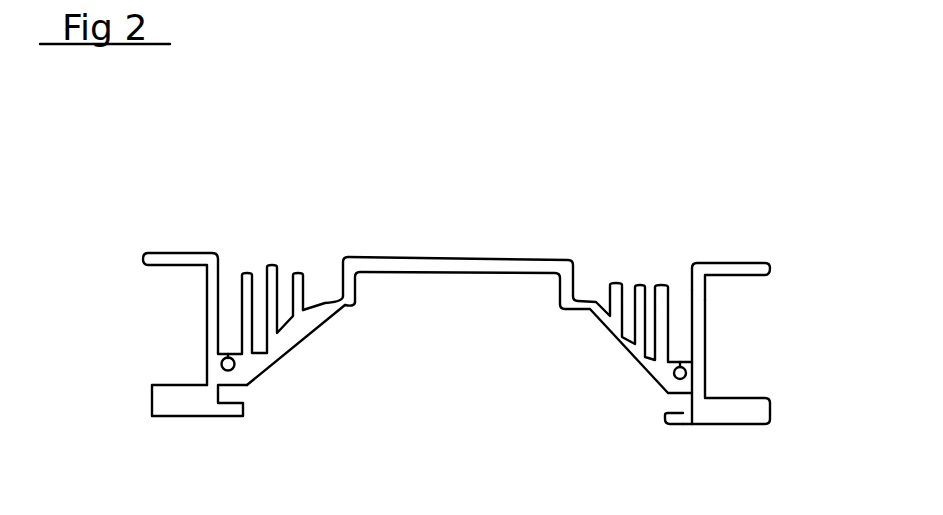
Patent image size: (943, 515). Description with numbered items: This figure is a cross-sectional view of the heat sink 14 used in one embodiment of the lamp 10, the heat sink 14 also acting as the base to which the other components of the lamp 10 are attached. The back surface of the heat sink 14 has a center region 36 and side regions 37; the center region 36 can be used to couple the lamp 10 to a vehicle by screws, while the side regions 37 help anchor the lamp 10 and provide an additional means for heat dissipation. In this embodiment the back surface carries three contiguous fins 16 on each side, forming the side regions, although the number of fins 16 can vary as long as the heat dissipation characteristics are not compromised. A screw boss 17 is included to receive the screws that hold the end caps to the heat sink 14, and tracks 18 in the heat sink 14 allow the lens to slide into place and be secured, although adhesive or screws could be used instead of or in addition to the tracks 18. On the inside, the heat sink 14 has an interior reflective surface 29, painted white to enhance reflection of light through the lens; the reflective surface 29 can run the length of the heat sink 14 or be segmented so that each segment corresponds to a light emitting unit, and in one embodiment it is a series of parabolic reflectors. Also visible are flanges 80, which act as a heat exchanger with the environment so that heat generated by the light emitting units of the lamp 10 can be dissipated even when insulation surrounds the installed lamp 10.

The lamp 10 is at (255, 164).
The heat sink 14 is at (372, 262).
The center region 36 is at (453, 258).
The contiguous fins 16 is at (612, 293).
The interior reflective surface 29 is at (299, 333).
The flanges 80 is at (170, 402).
The screw boss 17 is at (688, 371).
The tracks 18 is at (685, 404).
The side regions 37 is at (733, 262).